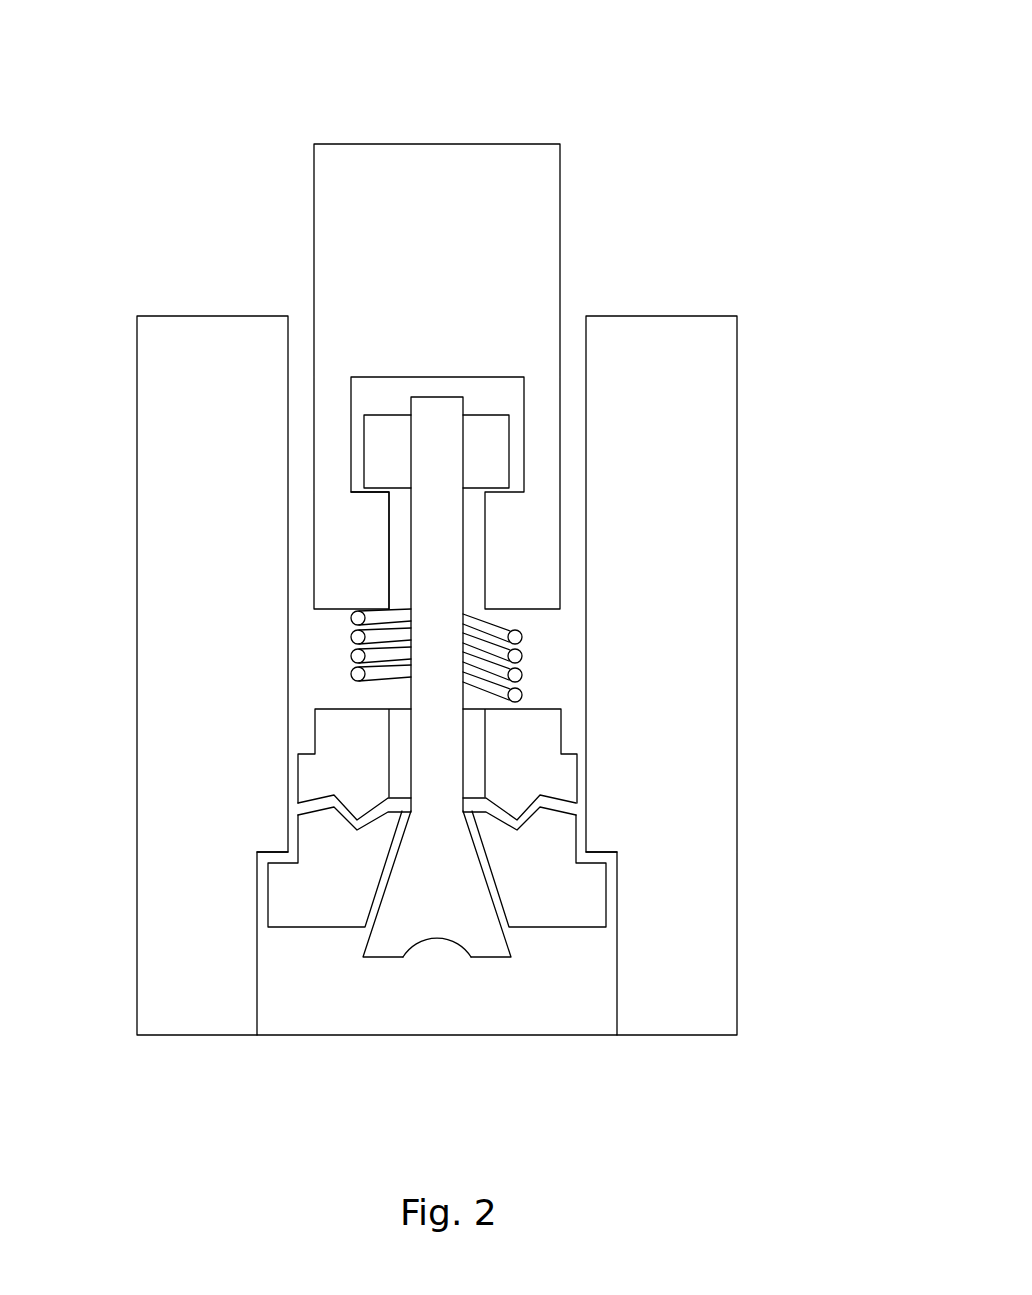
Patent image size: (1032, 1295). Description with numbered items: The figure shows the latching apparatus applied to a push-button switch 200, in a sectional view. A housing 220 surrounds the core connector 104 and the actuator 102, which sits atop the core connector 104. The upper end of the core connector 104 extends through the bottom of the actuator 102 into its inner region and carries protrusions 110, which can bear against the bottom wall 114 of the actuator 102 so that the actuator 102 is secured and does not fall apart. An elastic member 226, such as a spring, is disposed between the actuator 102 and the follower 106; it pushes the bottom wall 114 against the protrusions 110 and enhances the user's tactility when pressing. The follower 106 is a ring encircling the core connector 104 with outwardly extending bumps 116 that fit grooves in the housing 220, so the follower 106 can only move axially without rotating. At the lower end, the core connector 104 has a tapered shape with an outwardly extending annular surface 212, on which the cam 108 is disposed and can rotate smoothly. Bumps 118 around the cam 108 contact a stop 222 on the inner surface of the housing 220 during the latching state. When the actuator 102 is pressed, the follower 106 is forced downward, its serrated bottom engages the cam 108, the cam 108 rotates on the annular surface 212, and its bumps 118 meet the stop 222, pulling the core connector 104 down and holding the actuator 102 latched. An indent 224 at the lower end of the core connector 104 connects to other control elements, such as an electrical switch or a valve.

The push-button switch 200 is at (582, 105).
The actuator 102 is at (535, 215).
The core connector 104 is at (436, 563).
The follower 106 is at (527, 725).
The cam 108 is at (530, 836).
The protrusions 110 is at (498, 457).
The bottom wall 114 is at (367, 500).
The bumps 116 is at (565, 778).
The bumps 118 is at (588, 892).
The annular surface 212 is at (475, 914).
The housing 220 is at (655, 340).
The stop 222 is at (268, 835).
The indent 224 is at (434, 950).
The elastic member 226 is at (512, 656).